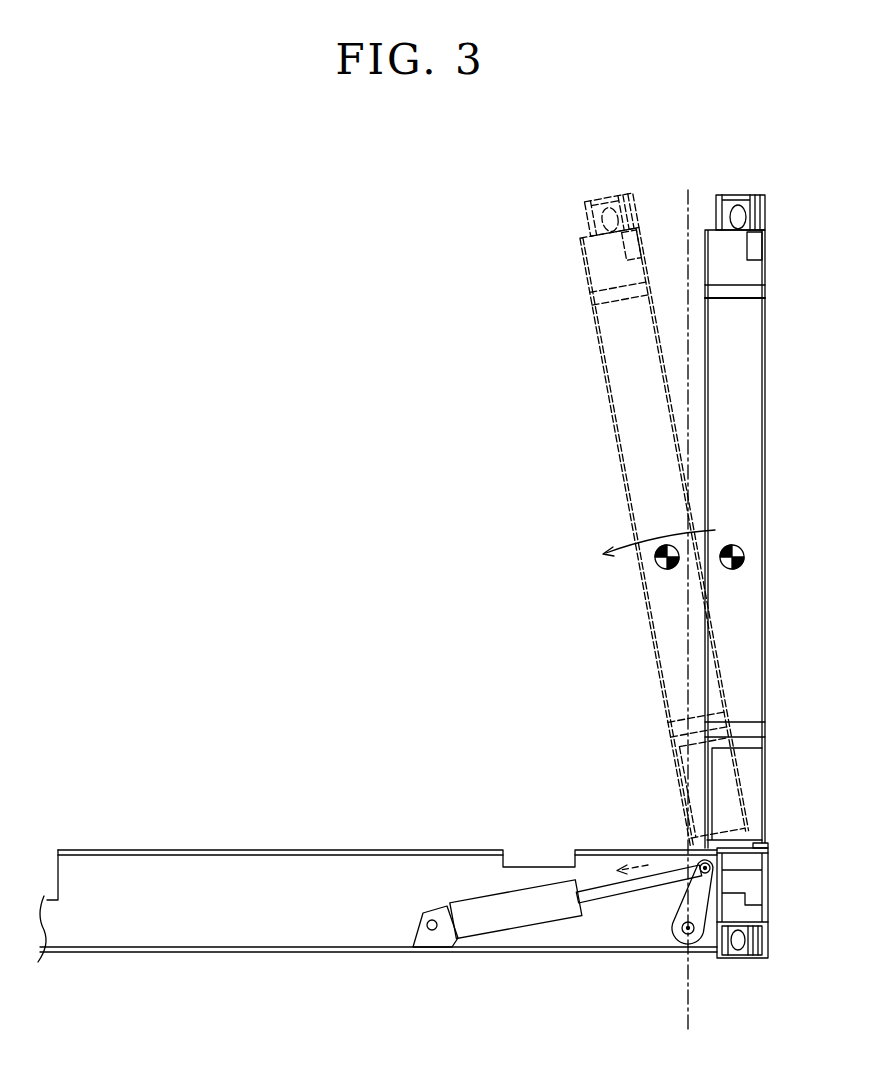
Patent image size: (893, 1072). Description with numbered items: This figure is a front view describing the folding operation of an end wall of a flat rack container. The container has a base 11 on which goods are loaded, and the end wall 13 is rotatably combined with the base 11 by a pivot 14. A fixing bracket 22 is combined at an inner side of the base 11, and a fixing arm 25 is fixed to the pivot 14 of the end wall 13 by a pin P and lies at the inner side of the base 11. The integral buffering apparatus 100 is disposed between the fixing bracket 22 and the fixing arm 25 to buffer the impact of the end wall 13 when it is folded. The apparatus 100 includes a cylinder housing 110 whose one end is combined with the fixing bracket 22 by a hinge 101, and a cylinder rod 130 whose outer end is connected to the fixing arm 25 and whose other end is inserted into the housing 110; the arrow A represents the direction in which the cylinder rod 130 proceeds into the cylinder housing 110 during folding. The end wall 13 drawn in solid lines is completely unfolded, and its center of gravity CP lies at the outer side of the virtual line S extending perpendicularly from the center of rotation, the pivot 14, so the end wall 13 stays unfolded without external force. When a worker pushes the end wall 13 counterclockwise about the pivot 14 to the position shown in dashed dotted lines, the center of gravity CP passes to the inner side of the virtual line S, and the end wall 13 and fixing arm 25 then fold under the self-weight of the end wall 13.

The base 11 is at (280, 850).
The end wall 13 is at (748, 346).
The pivot 14 is at (705, 958).
The fixing bracket 22 is at (421, 940).
The fixing arm 25 is at (681, 944).
The integral buffering apparatus 100 is at (576, 936).
The hinge 101 is at (433, 932).
The cylinder housing 110 is at (497, 922).
The cylinder rod 130 is at (614, 892).
The pin P is at (700, 865).
The virtual line S is at (688, 1012).
The center of gravity CP is at (745, 553).
The arrow A is at (624, 870).